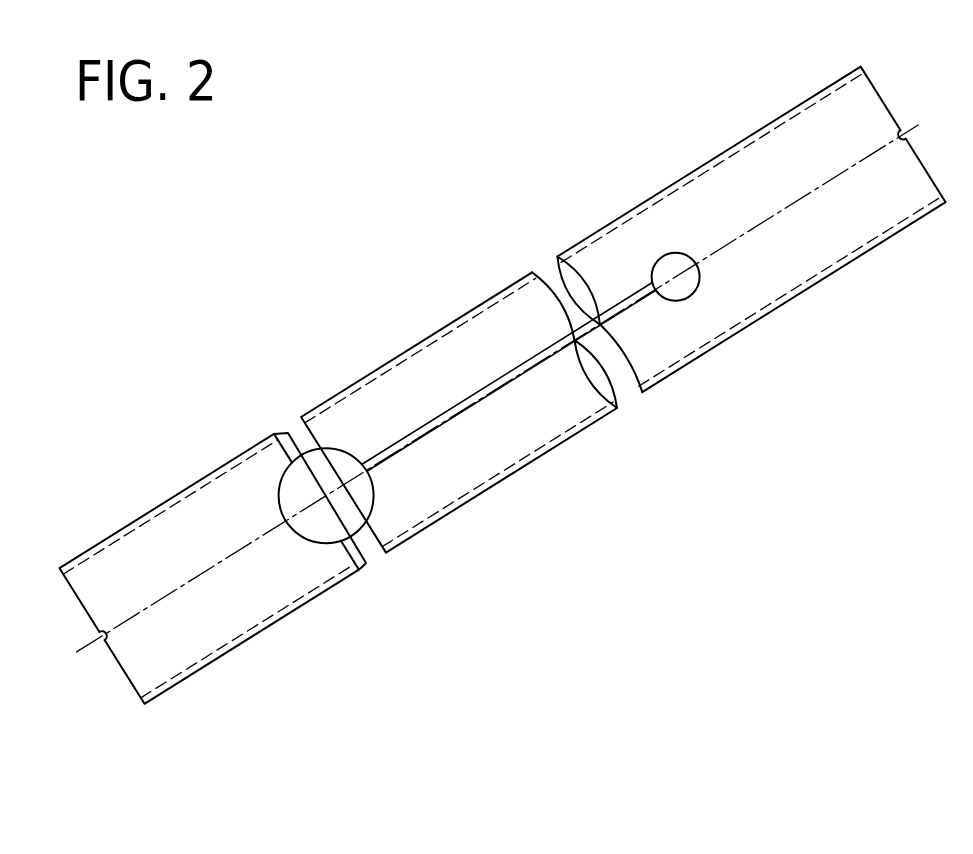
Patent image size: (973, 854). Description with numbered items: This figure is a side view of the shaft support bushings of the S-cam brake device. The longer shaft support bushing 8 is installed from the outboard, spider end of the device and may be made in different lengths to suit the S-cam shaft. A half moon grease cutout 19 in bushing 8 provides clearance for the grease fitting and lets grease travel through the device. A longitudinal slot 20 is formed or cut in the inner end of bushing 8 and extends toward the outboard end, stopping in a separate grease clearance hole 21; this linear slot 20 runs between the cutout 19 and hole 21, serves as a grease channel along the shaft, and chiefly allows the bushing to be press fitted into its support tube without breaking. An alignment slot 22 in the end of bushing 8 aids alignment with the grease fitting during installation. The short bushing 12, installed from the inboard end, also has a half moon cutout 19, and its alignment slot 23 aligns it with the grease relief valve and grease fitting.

The shaft support bushing 8 is at (720, 345).
The short bushing 12 is at (167, 498).
The half moon grease cutout 19 is at (340, 451).
The longitudinal slot 20 is at (467, 397).
The grease clearance hole 21 is at (662, 257).
The alignment slot 22 is at (904, 133).
The alignment slot 23 is at (104, 642).